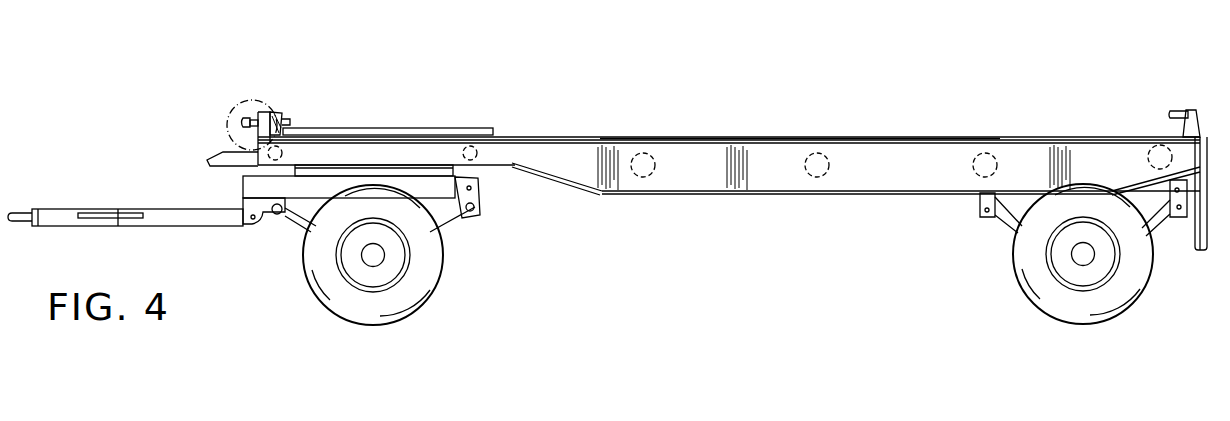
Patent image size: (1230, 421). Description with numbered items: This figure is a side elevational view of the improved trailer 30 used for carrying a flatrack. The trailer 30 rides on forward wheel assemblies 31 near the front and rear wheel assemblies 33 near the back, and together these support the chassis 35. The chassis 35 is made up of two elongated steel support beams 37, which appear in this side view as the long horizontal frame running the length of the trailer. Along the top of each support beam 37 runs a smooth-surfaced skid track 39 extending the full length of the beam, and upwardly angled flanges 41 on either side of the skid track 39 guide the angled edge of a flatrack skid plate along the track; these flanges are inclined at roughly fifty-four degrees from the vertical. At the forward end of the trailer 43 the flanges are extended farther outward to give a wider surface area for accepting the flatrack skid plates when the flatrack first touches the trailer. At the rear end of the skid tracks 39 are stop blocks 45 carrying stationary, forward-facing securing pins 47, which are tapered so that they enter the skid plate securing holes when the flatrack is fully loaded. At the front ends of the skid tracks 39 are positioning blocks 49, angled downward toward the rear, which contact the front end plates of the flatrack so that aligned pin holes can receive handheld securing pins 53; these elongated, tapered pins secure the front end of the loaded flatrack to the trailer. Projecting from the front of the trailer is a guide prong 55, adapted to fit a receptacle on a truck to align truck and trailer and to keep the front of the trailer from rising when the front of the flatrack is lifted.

The trailer 30 is at (614, 103).
The forward wheel assemblies 31 is at (458, 239).
The rear wheel assemblies 33 is at (1003, 239).
The chassis 35 is at (548, 187).
The support beams 37 is at (711, 194).
The skid track 39 is at (758, 137).
The flanges 41 is at (880, 137).
The forward end of the trailer 43 is at (413, 128).
The stop blocks 45 is at (1199, 110).
The securing pins 47 is at (1175, 110).
The positioning blocks 49 is at (273, 116).
The handheld securing pins 53 is at (243, 120).
The guide prong 55 is at (222, 152).